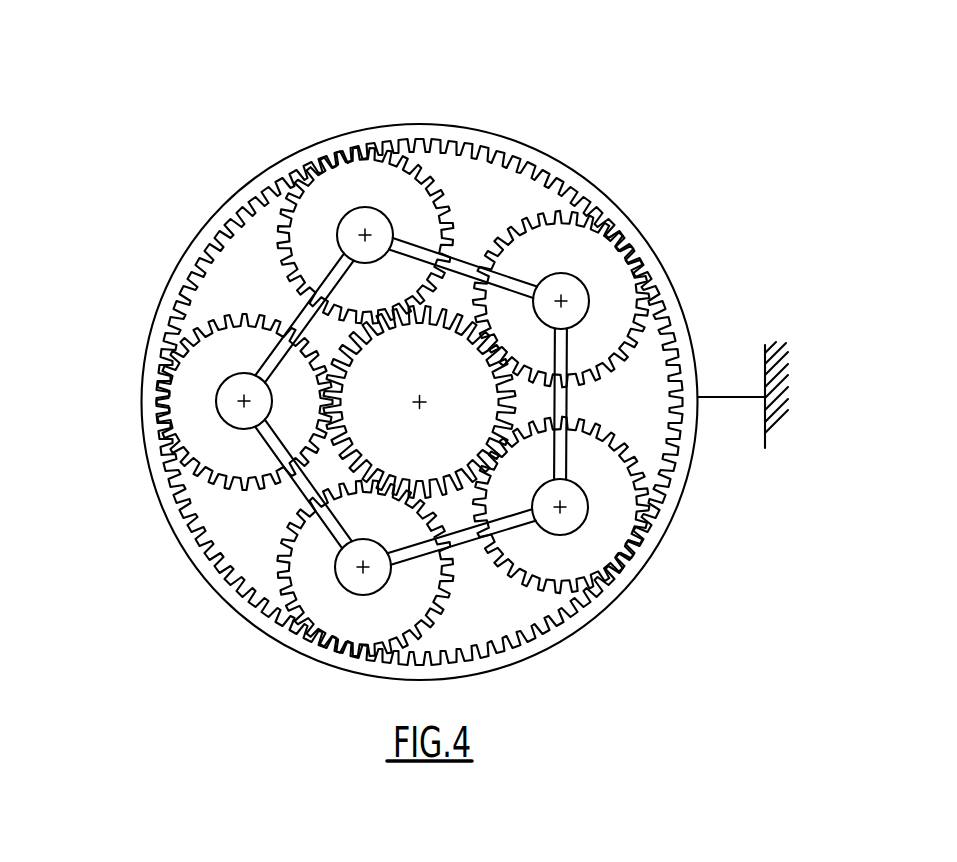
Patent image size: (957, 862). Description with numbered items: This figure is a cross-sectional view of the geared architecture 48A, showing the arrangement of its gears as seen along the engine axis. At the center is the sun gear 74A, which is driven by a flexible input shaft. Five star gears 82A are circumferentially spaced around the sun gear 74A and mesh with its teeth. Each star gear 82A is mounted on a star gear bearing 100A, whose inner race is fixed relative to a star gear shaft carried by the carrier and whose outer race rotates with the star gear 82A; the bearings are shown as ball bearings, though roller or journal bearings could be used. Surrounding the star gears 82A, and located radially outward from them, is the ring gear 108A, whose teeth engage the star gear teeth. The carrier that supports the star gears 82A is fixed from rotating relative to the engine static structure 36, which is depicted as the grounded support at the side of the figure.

The geared architecture 48A is at (526, 100).
The ring gear 108A is at (368, 106).
The sun gear 74A is at (376, 425).
The star gears 82A is at (447, 217).
The star gear bearings 100A is at (338, 228).
The engine static structure 36 is at (780, 377).